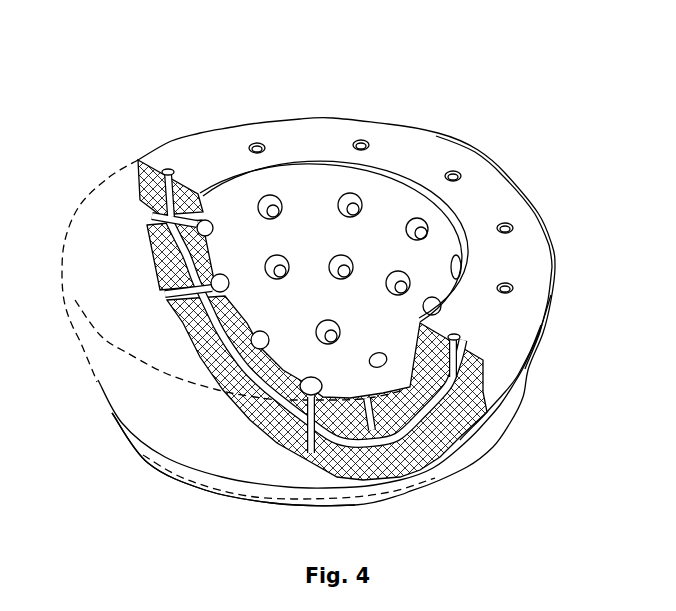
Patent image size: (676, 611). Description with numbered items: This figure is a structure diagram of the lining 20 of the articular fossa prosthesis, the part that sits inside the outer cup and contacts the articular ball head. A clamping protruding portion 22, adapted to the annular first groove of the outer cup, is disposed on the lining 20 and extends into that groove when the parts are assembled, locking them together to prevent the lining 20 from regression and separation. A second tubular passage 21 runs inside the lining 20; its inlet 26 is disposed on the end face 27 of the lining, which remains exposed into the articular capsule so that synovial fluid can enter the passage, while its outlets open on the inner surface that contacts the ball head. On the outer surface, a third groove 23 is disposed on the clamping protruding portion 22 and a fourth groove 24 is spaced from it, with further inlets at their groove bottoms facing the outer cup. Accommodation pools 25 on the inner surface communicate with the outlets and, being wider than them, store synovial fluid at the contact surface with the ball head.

The lining 20 is at (518, 137).
The second tubular passage 21 is at (138, 160).
The clamping protruding portion 22 is at (478, 452).
The third groove 23 is at (170, 298).
The fourth groove 24 is at (501, 393).
The accommodation pool 25 is at (400, 280).
The inlet of the second tubular passage 26 is at (360, 140).
The end face of the lining 27 is at (523, 250).